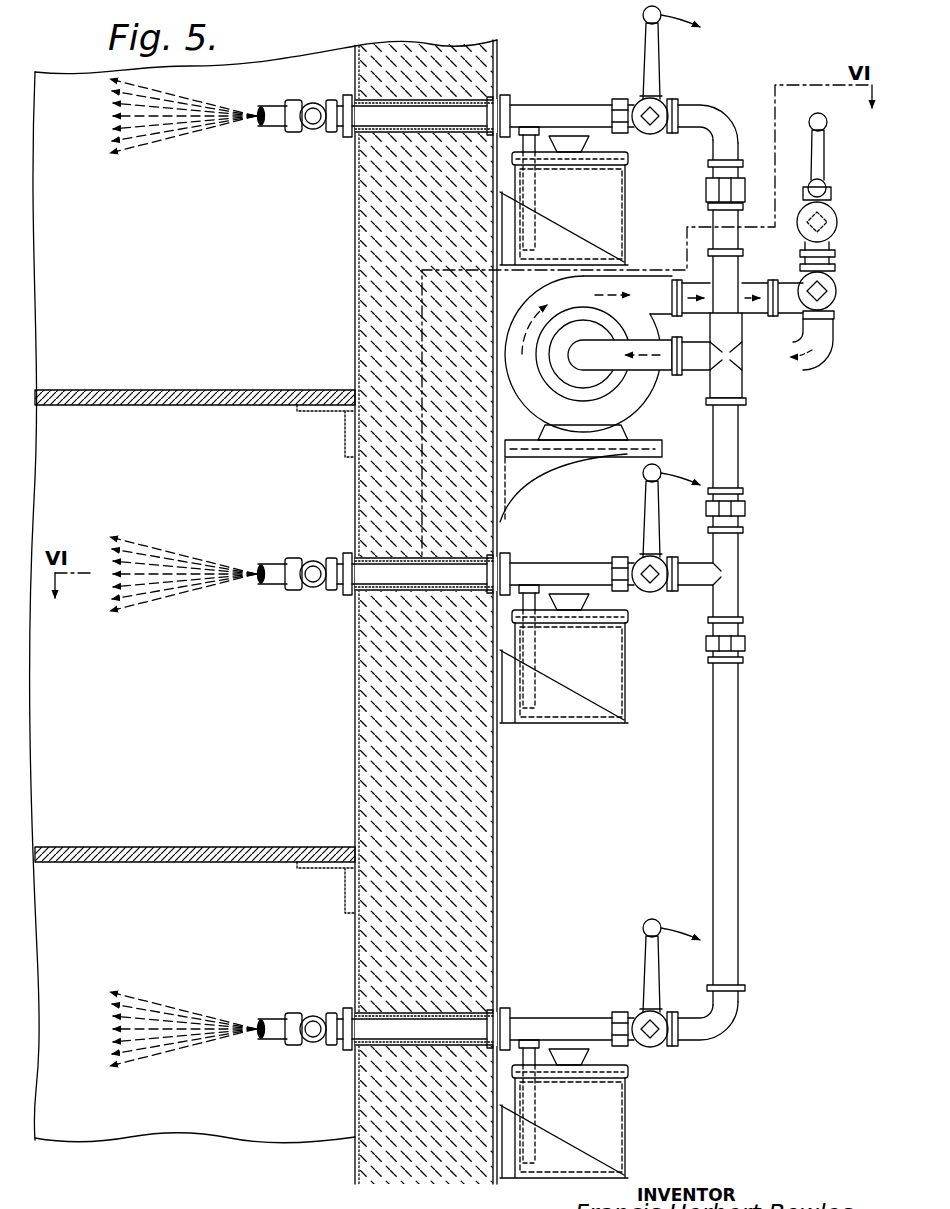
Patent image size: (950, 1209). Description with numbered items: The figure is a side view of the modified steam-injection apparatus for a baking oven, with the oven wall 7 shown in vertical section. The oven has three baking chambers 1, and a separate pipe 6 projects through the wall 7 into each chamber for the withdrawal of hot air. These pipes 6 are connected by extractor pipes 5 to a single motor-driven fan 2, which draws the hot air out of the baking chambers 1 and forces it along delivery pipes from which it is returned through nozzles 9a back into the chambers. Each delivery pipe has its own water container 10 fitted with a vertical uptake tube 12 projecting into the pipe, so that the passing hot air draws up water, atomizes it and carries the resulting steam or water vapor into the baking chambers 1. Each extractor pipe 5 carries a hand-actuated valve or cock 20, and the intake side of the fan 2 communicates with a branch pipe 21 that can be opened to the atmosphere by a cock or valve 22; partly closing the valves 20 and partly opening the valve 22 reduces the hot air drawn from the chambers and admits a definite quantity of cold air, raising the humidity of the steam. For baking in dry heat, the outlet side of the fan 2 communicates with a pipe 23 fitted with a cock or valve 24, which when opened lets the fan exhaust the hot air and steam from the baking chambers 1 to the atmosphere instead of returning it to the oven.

The baking chamber 1 is at (140, 368).
The motor-driven fan 2 is at (628, 396).
The extractor pipe 5 is at (712, 207).
The pipe 6 is at (442, 113).
The oven wall 7 is at (355, 472).
The nozzle 9a is at (280, 121).
The water container 10 is at (608, 218).
The vertical uptake tube 12 is at (537, 140).
The hand-actuated valve or cock 20 is at (662, 103).
The branch pipe 21 is at (818, 356).
The cock or valve 22 is at (836, 282).
The pipe 23 is at (789, 287).
The cock or valve 24 is at (836, 214).